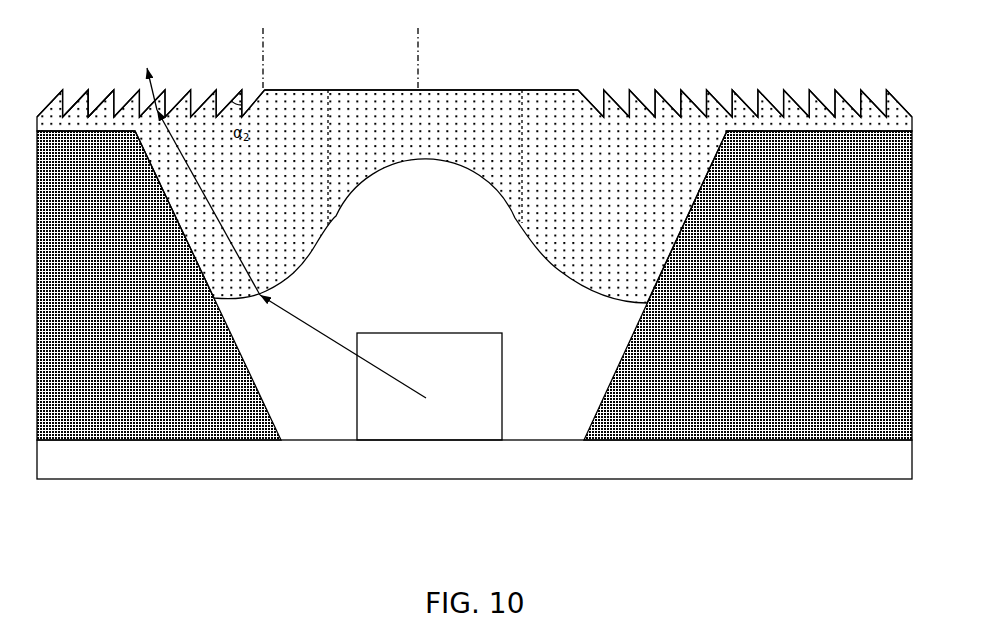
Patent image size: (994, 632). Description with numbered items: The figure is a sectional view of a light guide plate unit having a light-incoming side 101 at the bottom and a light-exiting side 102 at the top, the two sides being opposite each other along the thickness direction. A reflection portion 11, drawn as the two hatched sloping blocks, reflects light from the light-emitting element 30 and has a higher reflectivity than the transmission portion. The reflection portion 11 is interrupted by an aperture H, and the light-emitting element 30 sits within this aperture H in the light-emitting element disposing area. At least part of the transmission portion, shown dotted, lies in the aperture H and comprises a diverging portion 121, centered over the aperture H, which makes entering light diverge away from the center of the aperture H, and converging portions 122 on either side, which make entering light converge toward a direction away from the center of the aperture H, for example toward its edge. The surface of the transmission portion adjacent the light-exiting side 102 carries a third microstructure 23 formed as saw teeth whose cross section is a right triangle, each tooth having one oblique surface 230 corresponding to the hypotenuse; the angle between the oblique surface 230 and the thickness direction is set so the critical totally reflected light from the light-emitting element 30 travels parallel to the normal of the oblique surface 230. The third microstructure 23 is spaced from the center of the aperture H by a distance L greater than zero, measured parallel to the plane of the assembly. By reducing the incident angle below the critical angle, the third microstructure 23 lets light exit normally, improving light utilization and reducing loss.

The light-exiting side 102 is at (778, 52).
The reflection portion 11 is at (160, 412).
The light-incoming side 101 is at (797, 509).
The light-emitting element 30 is at (456, 418).
The diverging portion 121 is at (421, 143).
The converging portion 122 is at (275, 265).
The third microstructure 23 is at (75, 92).
The oblique surface 230 is at (95, 95).
The aperture H is at (548, 376).
The distance L is at (418, 53).